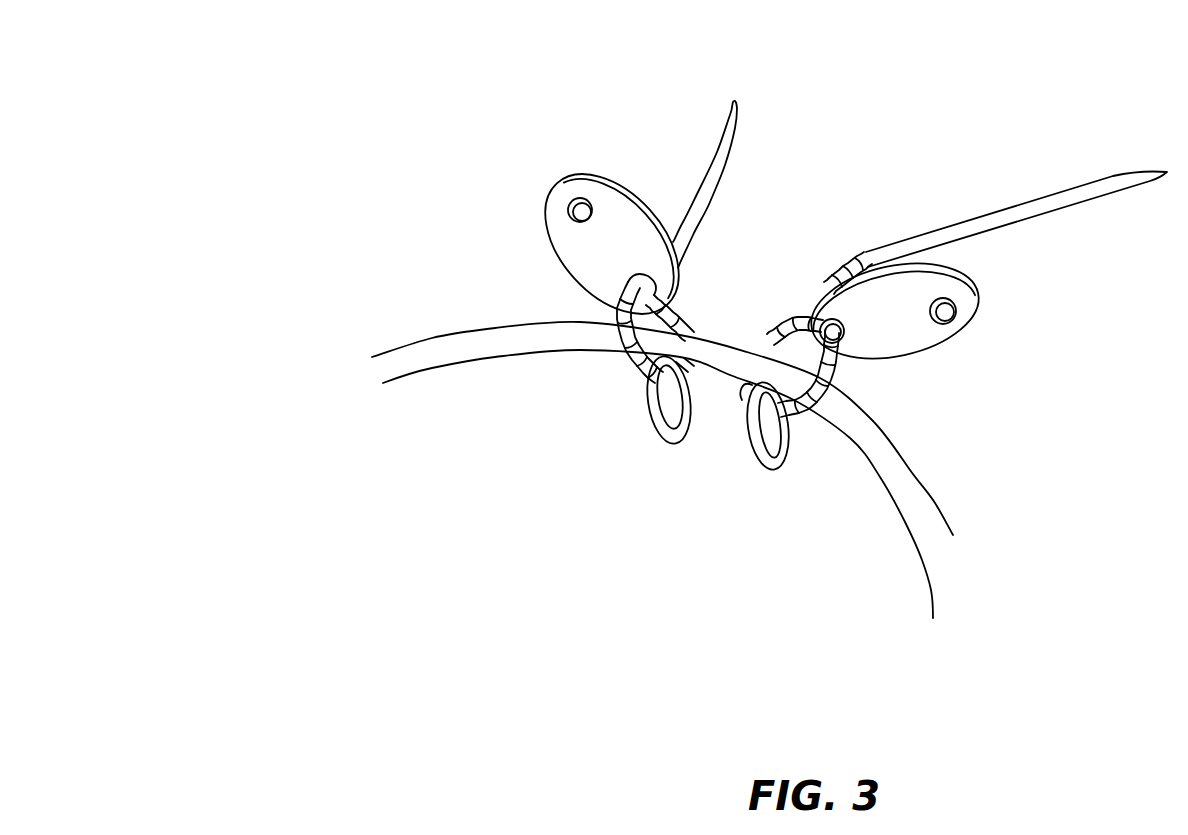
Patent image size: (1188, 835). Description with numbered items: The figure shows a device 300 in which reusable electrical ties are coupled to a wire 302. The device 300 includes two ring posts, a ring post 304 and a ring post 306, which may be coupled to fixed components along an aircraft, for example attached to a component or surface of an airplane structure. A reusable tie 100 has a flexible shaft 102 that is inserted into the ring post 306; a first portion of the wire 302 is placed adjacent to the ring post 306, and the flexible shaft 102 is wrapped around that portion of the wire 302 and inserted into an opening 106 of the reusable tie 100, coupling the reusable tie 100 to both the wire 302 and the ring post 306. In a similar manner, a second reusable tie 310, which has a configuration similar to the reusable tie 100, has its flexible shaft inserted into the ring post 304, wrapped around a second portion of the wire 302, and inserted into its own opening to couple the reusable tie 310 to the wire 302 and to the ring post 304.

The device 300 is at (308, 83).
The wire 302 is at (556, 357).
The ring post 304 is at (668, 445).
The ring post 306 is at (763, 472).
The reusable tie 310 is at (593, 303).
The reusable tie 100 is at (970, 318).
The flexible shaft 102 is at (794, 420).
The opening 106 is at (840, 347).